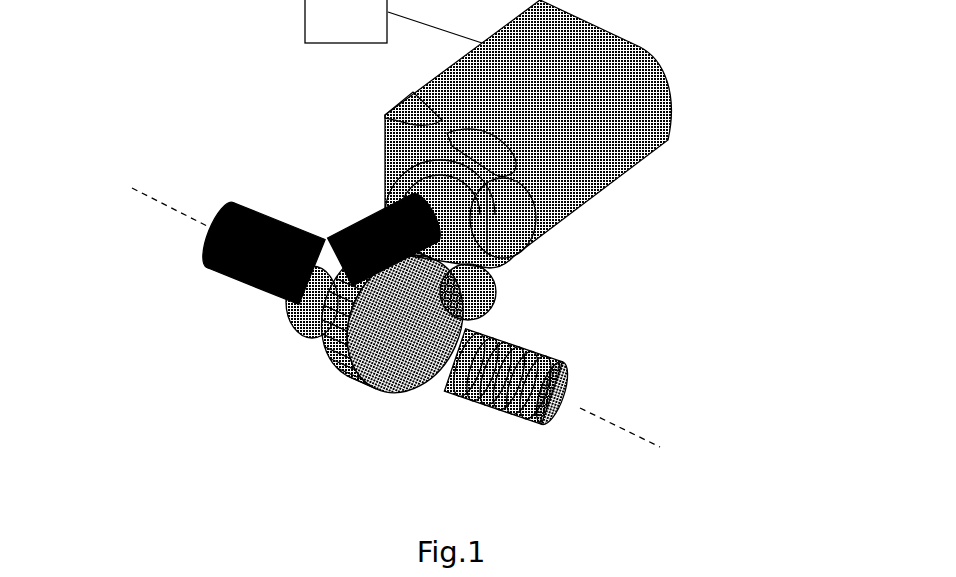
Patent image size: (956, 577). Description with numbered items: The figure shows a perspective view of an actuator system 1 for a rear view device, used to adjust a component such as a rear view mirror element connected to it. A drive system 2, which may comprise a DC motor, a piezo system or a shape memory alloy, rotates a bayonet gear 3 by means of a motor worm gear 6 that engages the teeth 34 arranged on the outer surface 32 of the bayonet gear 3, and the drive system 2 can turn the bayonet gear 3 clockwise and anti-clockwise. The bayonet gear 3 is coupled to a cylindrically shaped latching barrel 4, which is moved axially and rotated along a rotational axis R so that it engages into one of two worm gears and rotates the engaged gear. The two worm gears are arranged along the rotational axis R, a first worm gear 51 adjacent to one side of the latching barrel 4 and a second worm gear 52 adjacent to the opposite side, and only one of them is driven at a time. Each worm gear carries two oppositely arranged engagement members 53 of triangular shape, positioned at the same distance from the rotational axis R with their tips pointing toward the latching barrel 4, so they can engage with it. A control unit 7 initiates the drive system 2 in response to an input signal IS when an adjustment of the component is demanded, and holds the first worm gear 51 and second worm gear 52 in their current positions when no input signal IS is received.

The actuator system 1 is at (418, 239).
The drive system 2 is at (657, 78).
The bayonet gear 3 is at (305, 357).
The cylindrically shaped latching barrel 4 is at (390, 350).
The motor worm gear 6 is at (354, 206).
The control unit 7 is at (352, 21).
The input signal IS is at (304, 12).
The rotational axis R is at (395, 300).
The outer surface 32 is at (330, 363).
The teeth of the bayonet gear 34 is at (299, 347).
The first worm gear 51 is at (205, 241).
The second worm gear 52 is at (573, 403).
The engagement member 53 is at (306, 288).